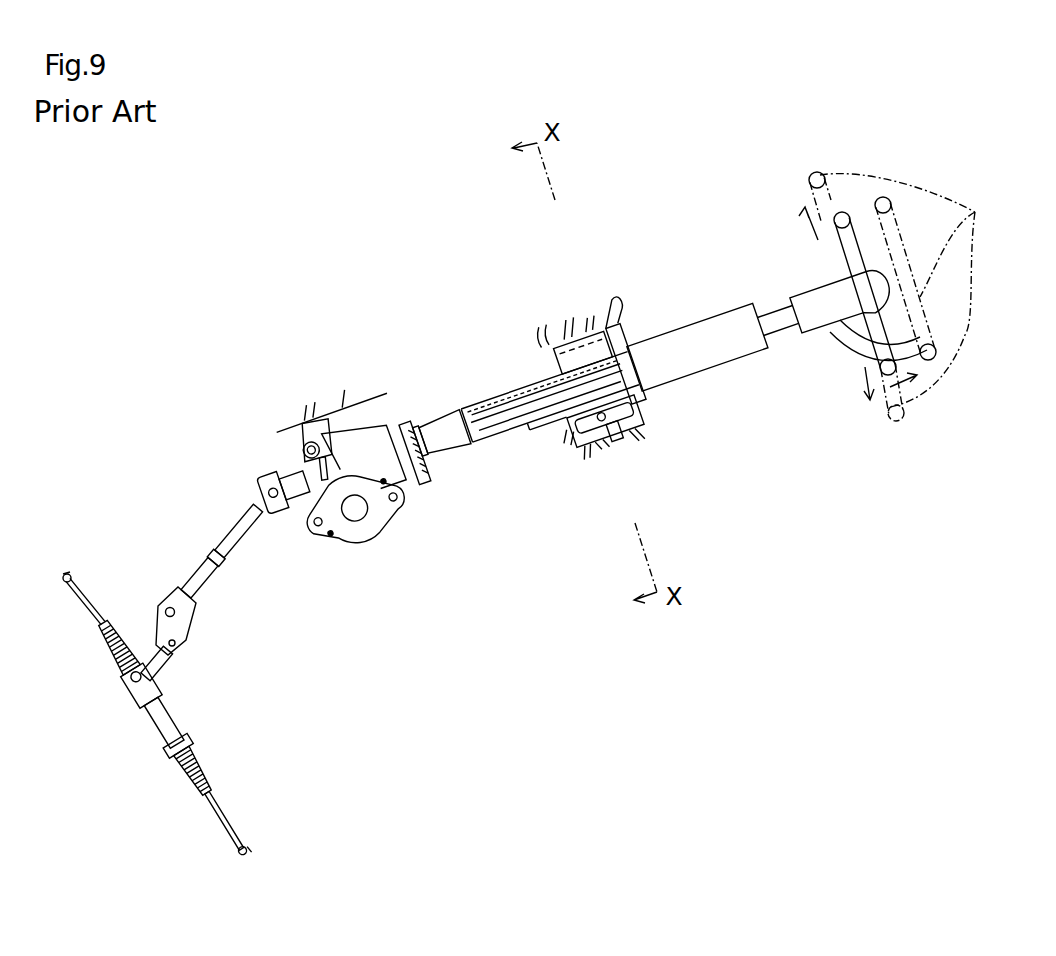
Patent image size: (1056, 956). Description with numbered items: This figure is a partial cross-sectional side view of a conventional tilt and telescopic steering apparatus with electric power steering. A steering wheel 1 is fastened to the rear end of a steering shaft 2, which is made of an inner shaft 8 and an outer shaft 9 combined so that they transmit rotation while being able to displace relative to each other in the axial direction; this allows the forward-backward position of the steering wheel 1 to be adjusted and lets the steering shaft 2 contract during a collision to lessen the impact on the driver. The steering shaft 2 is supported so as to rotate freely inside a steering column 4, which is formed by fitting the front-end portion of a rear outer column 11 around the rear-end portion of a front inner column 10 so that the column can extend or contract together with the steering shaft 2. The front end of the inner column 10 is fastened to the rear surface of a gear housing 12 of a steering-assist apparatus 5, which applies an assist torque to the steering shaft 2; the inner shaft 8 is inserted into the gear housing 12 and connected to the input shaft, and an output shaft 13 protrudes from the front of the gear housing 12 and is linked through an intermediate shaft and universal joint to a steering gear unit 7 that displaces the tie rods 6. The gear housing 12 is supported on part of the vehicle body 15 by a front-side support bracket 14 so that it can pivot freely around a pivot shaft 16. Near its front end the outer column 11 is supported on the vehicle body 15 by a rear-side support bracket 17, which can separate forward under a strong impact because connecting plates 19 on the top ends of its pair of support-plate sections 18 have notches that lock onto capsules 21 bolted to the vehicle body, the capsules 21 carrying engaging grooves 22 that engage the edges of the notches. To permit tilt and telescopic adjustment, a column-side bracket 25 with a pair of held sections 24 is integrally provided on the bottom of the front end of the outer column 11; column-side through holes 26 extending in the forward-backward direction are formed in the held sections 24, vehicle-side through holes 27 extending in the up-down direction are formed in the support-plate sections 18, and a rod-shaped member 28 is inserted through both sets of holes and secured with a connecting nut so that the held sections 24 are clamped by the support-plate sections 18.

The steering wheel 1 is at (863, 251).
The steering shaft 2 is at (508, 420).
The steering column 4 is at (556, 373).
The steering-assist apparatus 5 is at (357, 538).
The tie rods 6 is at (95, 612).
The steering gear unit 7 is at (132, 688).
The inner shaft 8 is at (517, 433).
The outer shaft 9 is at (553, 377).
The inner column 10 is at (492, 438).
The outer column 11 is at (746, 348).
The gear housing 12 is at (410, 493).
The output shaft 13 is at (298, 468).
The front-side support bracket 14 is at (292, 432).
The vehicle body 15 is at (568, 322).
The pivot shaft 16 is at (350, 453).
The rear-side support bracket 17 is at (627, 427).
The support-plate sections 18 is at (633, 413).
The connecting plates 19 is at (558, 322).
The capsules 21 is at (603, 323).
The engaging grooves 22 is at (586, 327).
The held sections 24 is at (563, 430).
The column-side bracket 25 is at (580, 433).
The column-side through holes 26 is at (648, 340).
The vehicle-side through holes 27 is at (613, 433).
The rod-shaped member 28 is at (598, 437).